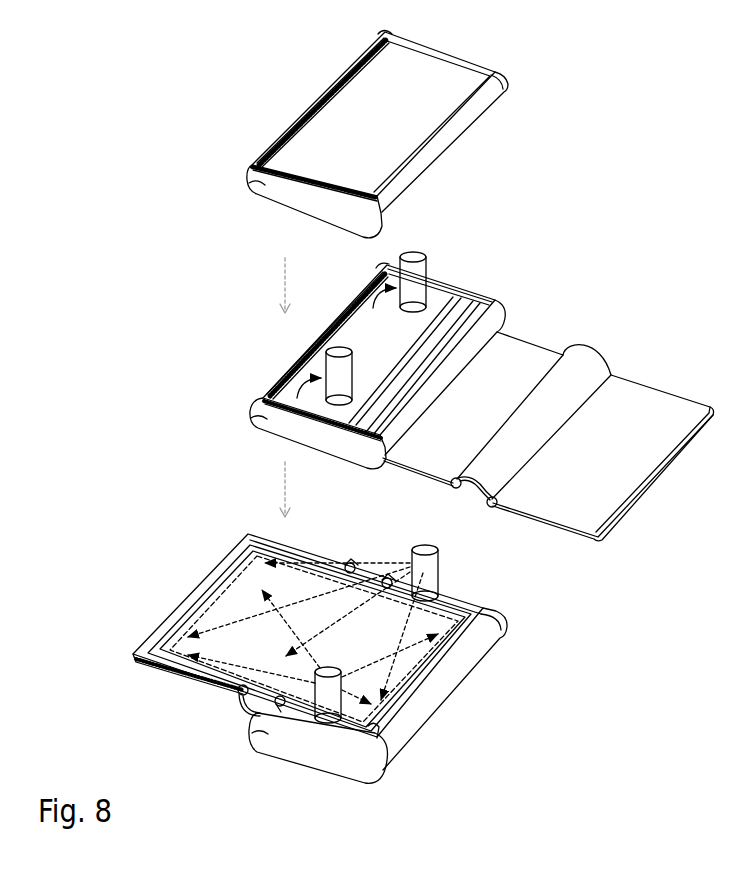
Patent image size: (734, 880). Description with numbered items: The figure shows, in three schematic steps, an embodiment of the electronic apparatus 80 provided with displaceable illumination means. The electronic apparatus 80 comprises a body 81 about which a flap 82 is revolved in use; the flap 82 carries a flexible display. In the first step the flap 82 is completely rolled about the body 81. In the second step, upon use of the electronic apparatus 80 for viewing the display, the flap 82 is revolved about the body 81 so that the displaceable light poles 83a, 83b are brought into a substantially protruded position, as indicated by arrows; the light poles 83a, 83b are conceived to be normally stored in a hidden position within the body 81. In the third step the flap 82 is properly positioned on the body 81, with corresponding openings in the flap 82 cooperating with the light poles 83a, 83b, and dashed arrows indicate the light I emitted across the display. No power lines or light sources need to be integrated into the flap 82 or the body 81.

The electronic apparatus 80 is at (82, 82).
The body 81 is at (275, 190).
The flap 82 is at (441, 73).
The displaceable light pole 83a is at (425, 261).
The displaceable light pole 83b is at (328, 358).
The light propagation path I is at (412, 674).